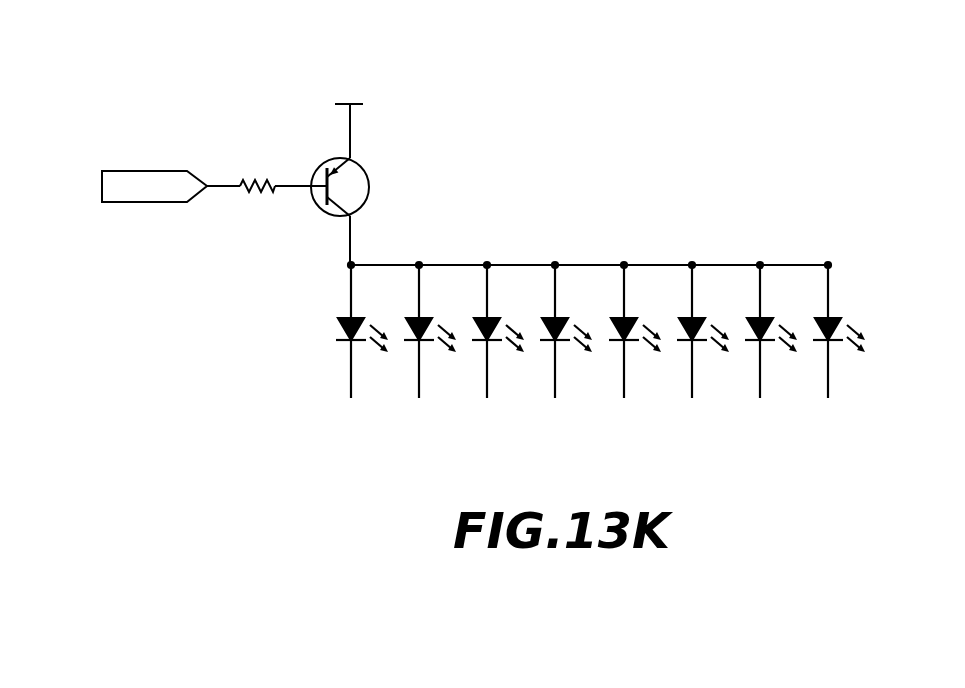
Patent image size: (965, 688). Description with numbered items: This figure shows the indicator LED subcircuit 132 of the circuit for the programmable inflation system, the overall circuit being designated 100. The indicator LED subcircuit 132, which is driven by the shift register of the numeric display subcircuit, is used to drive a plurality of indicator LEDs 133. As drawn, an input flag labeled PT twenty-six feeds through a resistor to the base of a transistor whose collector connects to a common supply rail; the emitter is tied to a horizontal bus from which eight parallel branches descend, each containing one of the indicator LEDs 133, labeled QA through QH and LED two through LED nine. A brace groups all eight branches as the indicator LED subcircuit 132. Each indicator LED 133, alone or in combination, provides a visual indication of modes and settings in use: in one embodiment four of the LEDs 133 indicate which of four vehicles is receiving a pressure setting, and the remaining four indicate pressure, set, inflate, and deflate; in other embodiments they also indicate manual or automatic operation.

The ventilator / light indicator circuit 100 is at (731, 57).
The indicator LED subcircuit 132 is at (875, 478).
The indicator LEDs 133 is at (824, 318).